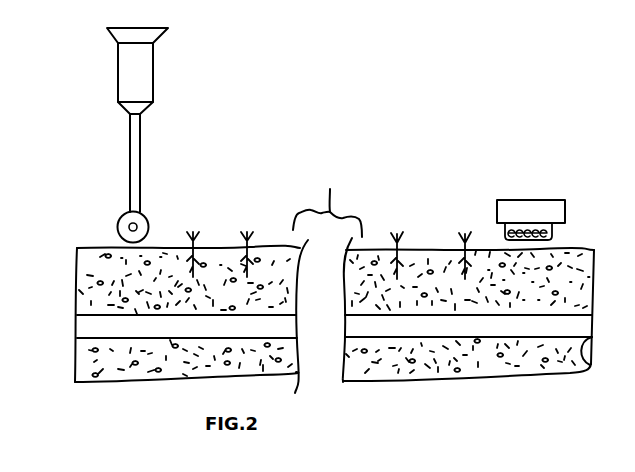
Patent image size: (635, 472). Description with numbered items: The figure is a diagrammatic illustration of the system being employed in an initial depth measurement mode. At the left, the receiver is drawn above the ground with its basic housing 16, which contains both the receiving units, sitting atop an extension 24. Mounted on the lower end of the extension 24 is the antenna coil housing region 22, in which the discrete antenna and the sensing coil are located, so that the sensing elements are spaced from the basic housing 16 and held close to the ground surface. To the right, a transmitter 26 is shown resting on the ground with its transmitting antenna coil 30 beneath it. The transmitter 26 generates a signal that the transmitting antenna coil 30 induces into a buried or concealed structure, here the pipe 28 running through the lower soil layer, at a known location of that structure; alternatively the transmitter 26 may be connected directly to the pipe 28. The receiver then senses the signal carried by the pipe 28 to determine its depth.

The basic housing 16 is at (153, 68).
The extension 24 is at (140, 155).
The antenna coil housing region 22 is at (148, 219).
The transmitter 26 is at (565, 206).
The transmitting antenna coil 30 is at (552, 232).
The pipe 28 is at (592, 358).